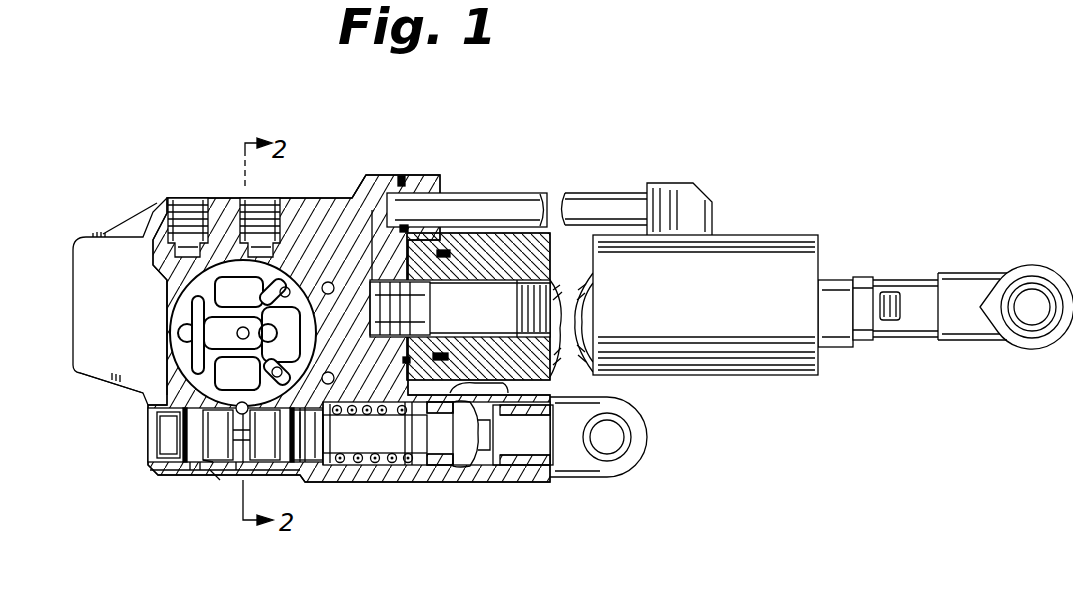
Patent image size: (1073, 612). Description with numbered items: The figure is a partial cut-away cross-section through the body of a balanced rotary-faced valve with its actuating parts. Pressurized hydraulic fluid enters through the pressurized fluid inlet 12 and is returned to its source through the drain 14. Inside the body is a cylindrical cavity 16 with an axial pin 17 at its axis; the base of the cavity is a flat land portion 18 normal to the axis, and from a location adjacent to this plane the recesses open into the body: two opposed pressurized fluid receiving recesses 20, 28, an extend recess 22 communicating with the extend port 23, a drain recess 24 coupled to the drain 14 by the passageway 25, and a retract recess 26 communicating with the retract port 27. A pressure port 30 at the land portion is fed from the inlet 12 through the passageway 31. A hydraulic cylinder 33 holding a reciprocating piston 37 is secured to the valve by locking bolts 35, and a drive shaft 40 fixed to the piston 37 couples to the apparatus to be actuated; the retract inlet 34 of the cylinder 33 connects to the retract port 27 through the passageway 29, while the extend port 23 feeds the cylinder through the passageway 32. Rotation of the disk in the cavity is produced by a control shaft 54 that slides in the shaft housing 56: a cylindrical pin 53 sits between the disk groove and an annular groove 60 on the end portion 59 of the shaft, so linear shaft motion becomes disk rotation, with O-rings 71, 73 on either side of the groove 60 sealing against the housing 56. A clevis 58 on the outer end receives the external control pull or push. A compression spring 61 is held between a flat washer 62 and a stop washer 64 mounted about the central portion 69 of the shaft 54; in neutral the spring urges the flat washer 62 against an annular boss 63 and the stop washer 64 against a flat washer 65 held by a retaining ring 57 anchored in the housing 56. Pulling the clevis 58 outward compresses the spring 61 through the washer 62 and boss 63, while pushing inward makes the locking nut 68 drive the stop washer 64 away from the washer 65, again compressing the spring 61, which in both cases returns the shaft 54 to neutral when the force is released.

The pressurized fluid inlet 12 is at (183, 198).
The drain 14 is at (268, 198).
The cylindrical cavity 16 is at (177, 320).
The axial pin 17 is at (237, 333).
The land portion 18 is at (150, 403).
The pressurized fluid receiving recess 20 is at (215, 462).
The extend recess 22 is at (258, 432).
The extend port 23 is at (436, 433).
The drain recess 24 is at (165, 360).
The passageway 25 is at (232, 283).
The retract recess 26 is at (282, 287).
The retract port 27 is at (330, 200).
The pressurized fluid receiving recess 28 is at (250, 262).
The passageway 29 is at (372, 210).
The pressure port 30 is at (182, 345).
The passageway 31 is at (180, 284).
The passageway 32 is at (363, 470).
The hydraulic cylinder 33 is at (760, 237).
The retract inlet 34 is at (490, 213).
The locking bolts 35 is at (400, 213).
The piston 37 is at (563, 210).
The drive shaft 40 is at (560, 290).
The pin 53 is at (237, 374).
The control shaft 54 is at (170, 435).
The shaft housing 56 is at (173, 475).
The retaining ring 57 is at (473, 383).
The clevis 58 is at (640, 470).
The end portion 59 is at (193, 472).
The annular groove 60 is at (207, 478).
The compression spring 61 is at (370, 455).
The flat washer 62 is at (330, 470).
The annular boss 63 is at (236, 470).
The stop washer 64 is at (413, 483).
The flat washer 65 is at (427, 483).
The locking nut 68 is at (493, 467).
The central portion 69 is at (405, 465).
The O-ring 71 is at (160, 467).
The O-ring 73 is at (250, 487).